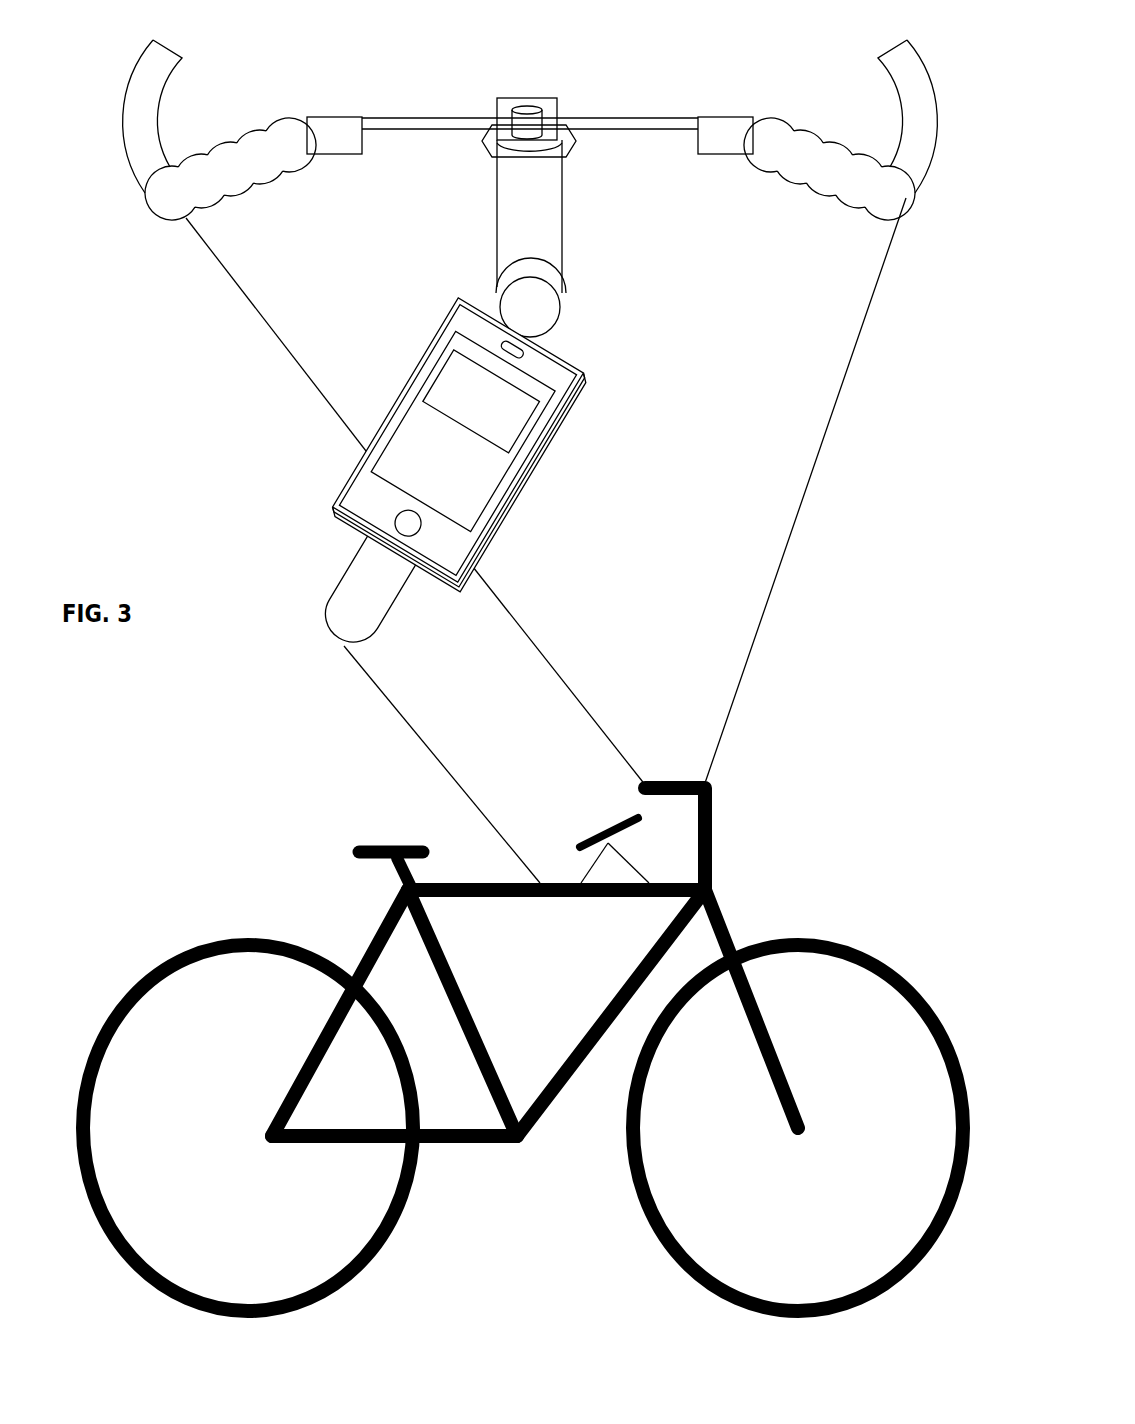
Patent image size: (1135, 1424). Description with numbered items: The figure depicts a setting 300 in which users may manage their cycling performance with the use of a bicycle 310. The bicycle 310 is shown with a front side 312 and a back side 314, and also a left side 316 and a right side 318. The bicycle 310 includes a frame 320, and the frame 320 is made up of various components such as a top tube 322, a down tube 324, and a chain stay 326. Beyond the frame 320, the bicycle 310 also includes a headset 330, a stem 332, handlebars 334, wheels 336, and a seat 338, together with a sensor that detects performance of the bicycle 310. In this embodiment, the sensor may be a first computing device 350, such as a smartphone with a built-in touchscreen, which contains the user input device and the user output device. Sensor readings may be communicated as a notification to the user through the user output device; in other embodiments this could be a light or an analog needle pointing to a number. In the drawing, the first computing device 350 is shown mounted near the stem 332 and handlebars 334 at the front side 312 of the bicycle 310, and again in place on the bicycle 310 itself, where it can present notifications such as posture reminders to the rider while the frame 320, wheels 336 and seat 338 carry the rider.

The setting 300 is at (874, 616).
The bicycle 310 is at (520, 1035).
The front side 312 is at (453, 88).
The back side 314 is at (129, 912).
The left side 316 is at (253, 463).
The right side 318 is at (607, 617).
The frame 320 is at (345, 566).
The top tube 322 is at (473, 883).
The down tube 324 is at (610, 1035).
The chain stay 326 is at (468, 1143).
The headset 330 is at (563, 212).
The stem 332 is at (557, 98).
The handlebars 334 is at (807, 109).
The wheels 336 is at (581, 1298).
The seat 338 is at (332, 822).
The first computing device 350 is at (508, 494).